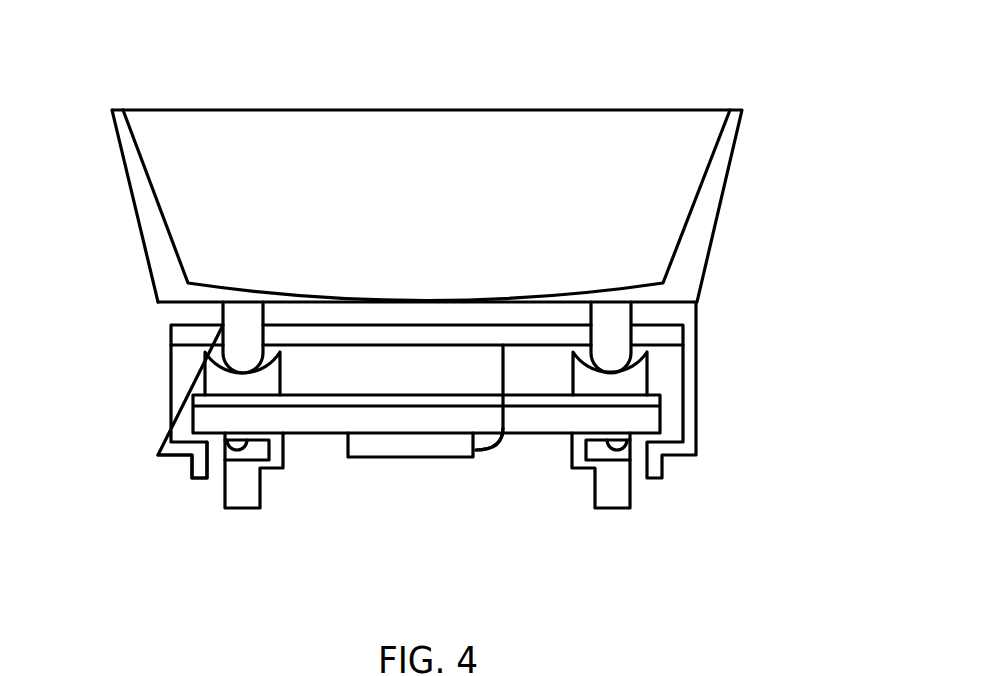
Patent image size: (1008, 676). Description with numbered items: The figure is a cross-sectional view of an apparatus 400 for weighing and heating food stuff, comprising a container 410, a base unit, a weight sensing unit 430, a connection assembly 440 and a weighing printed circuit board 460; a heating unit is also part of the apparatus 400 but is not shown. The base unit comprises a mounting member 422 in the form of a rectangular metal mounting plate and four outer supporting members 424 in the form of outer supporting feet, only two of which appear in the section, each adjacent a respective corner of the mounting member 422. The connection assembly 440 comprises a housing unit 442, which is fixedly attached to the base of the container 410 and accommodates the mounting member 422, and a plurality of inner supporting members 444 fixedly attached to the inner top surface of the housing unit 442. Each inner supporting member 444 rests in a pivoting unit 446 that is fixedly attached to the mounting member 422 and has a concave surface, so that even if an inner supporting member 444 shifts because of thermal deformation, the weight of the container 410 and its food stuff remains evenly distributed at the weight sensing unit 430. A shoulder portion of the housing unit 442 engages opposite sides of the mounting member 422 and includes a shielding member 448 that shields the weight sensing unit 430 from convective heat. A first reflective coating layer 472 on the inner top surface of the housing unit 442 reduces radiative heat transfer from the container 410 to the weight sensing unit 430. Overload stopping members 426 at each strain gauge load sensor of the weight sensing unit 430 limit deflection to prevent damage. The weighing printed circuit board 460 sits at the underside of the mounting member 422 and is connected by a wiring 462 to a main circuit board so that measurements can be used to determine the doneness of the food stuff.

The apparatus 400 is at (462, 287).
The container 410 is at (142, 188).
The first reflective coating layer 472 is at (413, 335).
The connection assembly 440 is at (473, 286).
The housing unit 442 is at (690, 362).
The inner supporting member 444 is at (236, 342).
The pivoting unit 446 is at (205, 372).
The shielding member 448 is at (188, 463).
The mounting member 422 is at (302, 417).
The outer supporting member 424 is at (224, 491).
The weight sensing unit 430 is at (270, 463).
The overload stopping member 426 is at (628, 445).
The weighing printed circuit board 460 is at (402, 458).
The wiring 462 is at (483, 446).